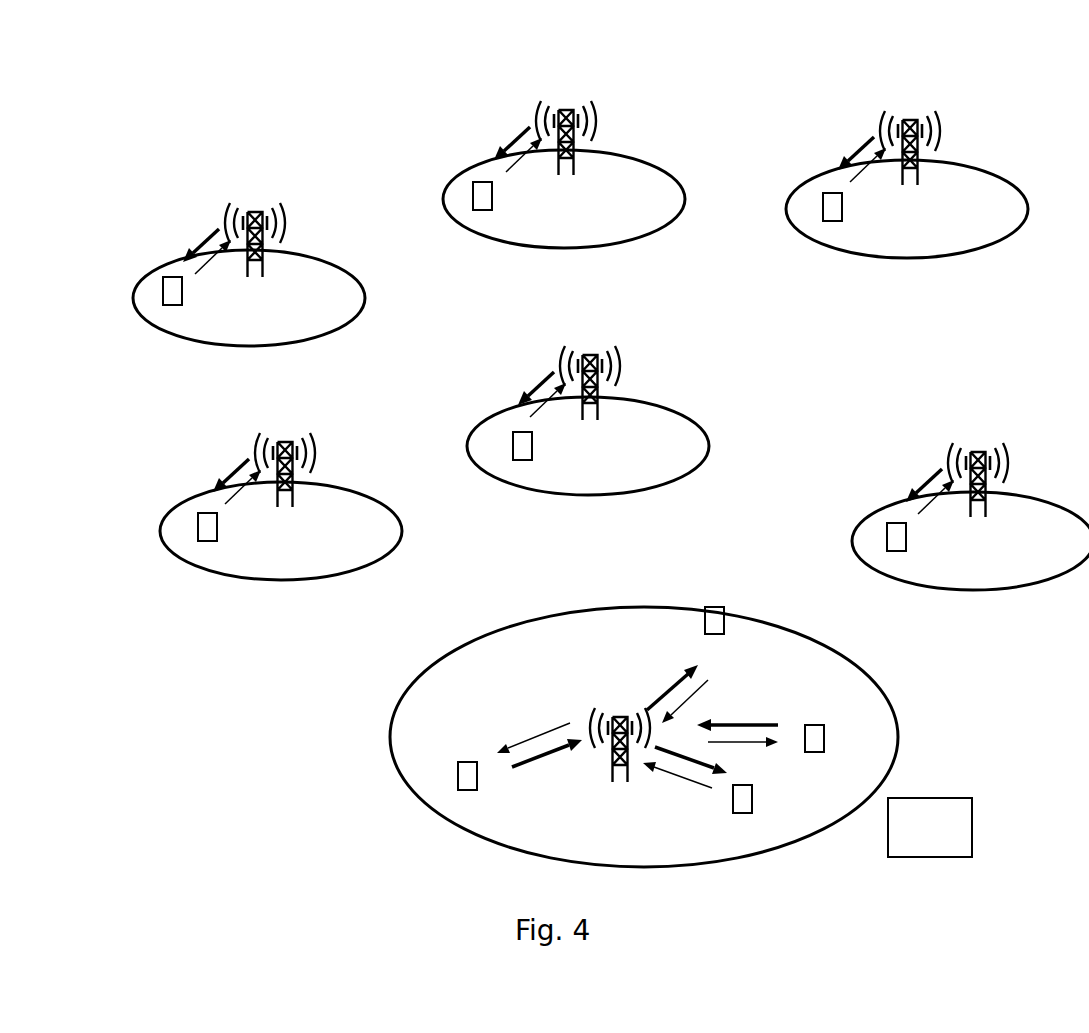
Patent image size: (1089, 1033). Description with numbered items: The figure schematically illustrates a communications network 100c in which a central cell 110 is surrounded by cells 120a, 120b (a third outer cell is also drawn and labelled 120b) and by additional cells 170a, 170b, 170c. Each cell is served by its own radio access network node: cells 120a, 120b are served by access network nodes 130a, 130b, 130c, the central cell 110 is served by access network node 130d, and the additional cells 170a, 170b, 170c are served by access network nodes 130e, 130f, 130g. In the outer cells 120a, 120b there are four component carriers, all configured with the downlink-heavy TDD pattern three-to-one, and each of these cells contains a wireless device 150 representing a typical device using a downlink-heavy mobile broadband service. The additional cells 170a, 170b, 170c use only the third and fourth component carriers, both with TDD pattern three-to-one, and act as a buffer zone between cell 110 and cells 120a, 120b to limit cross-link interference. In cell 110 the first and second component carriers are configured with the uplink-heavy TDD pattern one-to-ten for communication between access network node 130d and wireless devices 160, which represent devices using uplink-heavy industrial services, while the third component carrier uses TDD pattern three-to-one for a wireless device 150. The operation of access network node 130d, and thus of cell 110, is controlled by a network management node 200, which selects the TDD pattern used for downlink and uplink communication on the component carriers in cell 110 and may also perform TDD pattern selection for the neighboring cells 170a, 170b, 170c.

The communications network 100c is at (238, 79).
The cell 110 is at (463, 833).
The cell 120a is at (365, 300).
The cell 120b is at (623, 242).
The access network node 130a is at (255, 277).
The access network node 130b is at (567, 175).
The access network node 130c is at (910, 185).
The access network node 130d is at (615, 782).
The access network node 130e is at (282, 507).
The access network node 130f is at (585, 420).
The access network node 130g is at (972, 515).
The wireless device 150 is at (163, 303).
The wireless device 160 is at (458, 790).
The additional cell 170a is at (328, 562).
The additional cell 170b is at (682, 420).
The additional cell 170c is at (1037, 565).
The network management node 200 is at (908, 843).